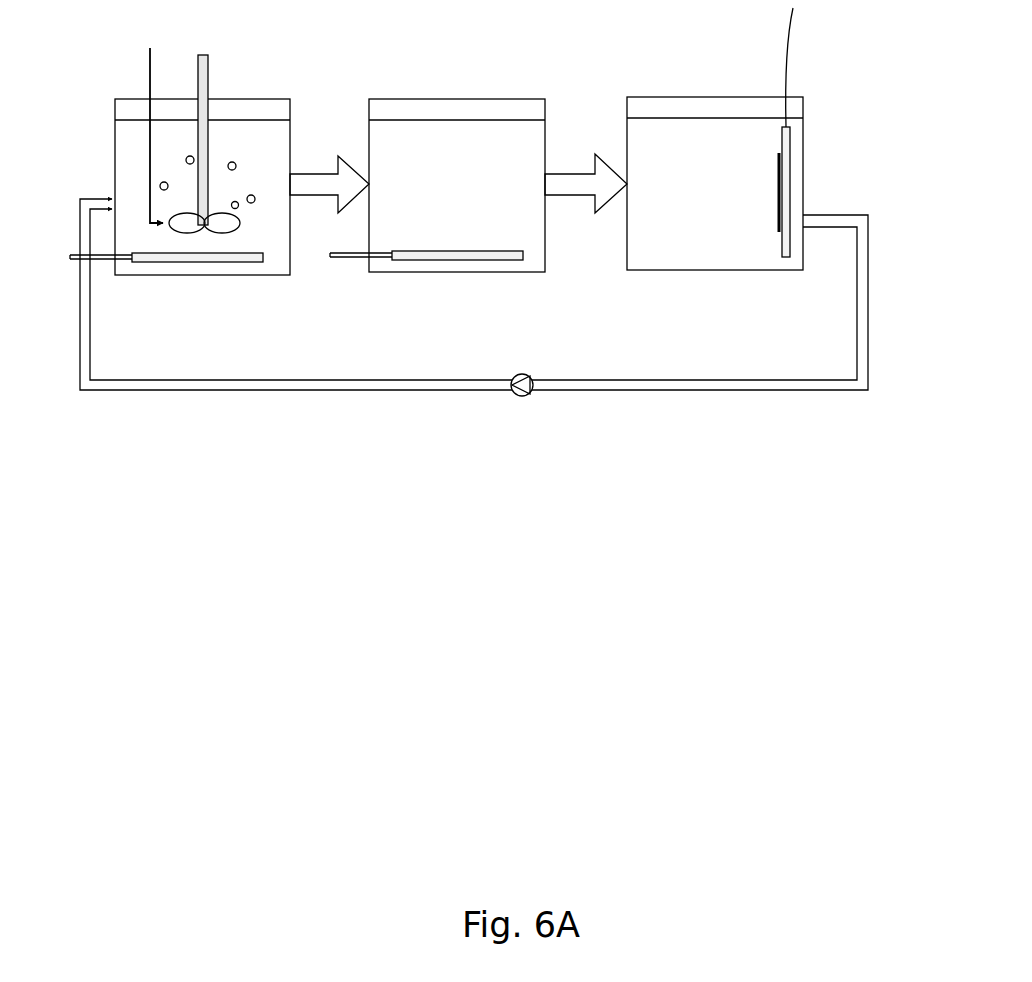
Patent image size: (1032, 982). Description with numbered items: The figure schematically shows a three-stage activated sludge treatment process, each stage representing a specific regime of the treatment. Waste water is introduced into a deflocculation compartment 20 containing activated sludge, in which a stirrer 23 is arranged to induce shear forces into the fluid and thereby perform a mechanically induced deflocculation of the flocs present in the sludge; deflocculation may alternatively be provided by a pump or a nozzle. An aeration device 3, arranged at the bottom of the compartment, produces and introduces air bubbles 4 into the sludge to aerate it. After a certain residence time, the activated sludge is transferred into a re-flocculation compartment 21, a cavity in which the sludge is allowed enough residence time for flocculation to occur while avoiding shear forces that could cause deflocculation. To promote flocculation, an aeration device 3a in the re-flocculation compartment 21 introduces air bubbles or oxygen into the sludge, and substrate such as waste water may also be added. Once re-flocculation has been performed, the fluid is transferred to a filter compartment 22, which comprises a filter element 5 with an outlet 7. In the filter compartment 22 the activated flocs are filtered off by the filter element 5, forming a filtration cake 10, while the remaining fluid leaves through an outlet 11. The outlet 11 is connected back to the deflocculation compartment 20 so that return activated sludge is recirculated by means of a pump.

The deflocculation compartment 20 is at (206, 142).
The re-flocculation compartment 21 is at (457, 140).
The filter compartment 22 is at (715, 139).
The stirrer 23 is at (150, 123).
The air bubbles 4 is at (291, 115).
The aeration device 3 is at (166, 297).
The aeration device 3a is at (426, 300).
The filtration cake 10 is at (743, 227).
The filter element 5 is at (815, 225).
The outlet 7 is at (815, 67).
The outlet 11 is at (474, 306).